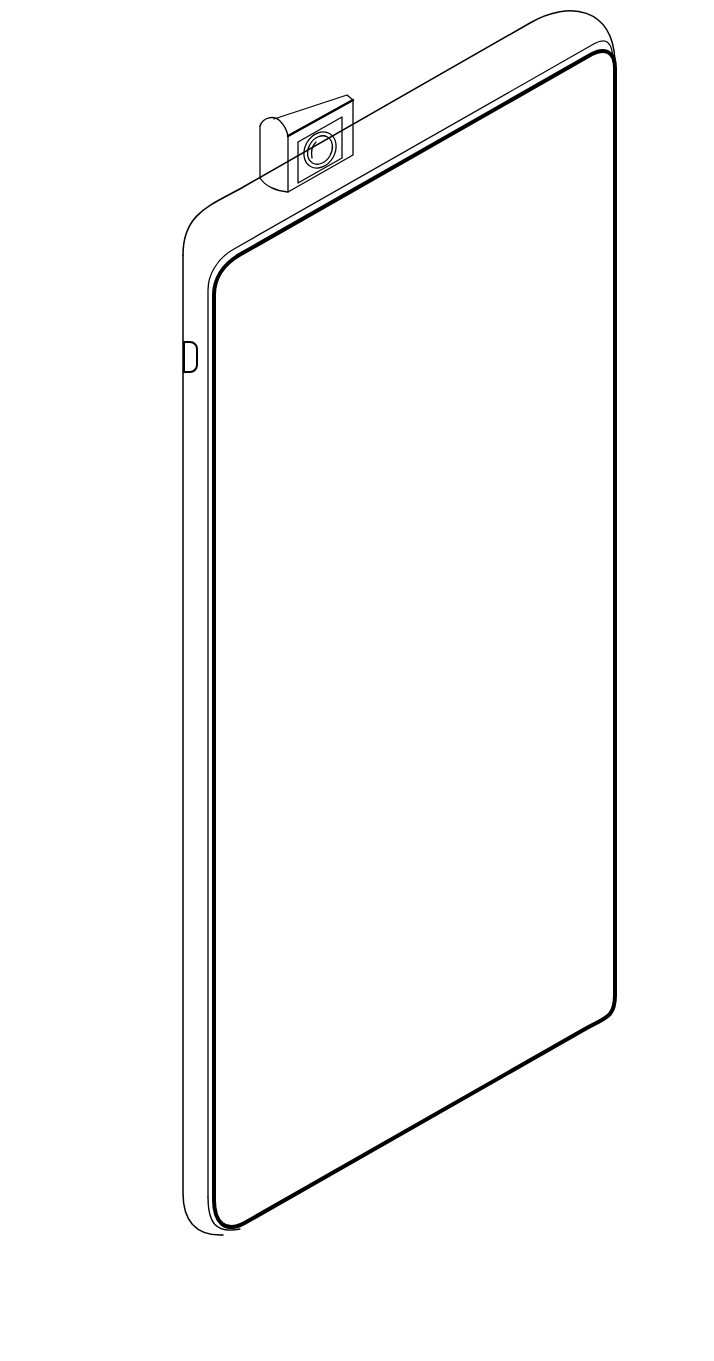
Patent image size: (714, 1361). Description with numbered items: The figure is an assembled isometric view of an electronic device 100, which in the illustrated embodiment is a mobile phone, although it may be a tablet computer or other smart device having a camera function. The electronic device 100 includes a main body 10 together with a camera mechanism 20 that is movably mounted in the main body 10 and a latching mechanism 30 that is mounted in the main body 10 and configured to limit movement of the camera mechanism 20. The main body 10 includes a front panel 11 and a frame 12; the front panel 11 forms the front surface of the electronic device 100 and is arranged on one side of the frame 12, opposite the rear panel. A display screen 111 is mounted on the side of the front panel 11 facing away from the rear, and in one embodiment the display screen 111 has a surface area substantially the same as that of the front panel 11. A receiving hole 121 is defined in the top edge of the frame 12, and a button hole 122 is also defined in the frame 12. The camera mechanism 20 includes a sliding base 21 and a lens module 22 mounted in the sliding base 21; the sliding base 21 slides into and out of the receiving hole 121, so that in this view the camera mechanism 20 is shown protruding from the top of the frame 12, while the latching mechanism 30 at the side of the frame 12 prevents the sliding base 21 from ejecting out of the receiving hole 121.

The electronic device 100 is at (200, 40).
The main body 10 is at (93, 885).
The front panel 11 is at (213, 940).
The frame 12 is at (193, 882).
The display screen 111 is at (248, 1022).
The receiving hole 121 is at (264, 172).
The button hole 122 is at (189, 369).
The camera mechanism 20 is at (230, 117).
The sliding base 21 is at (313, 103).
The lens module 22 is at (325, 147).
The latching mechanism 30 is at (185, 352).